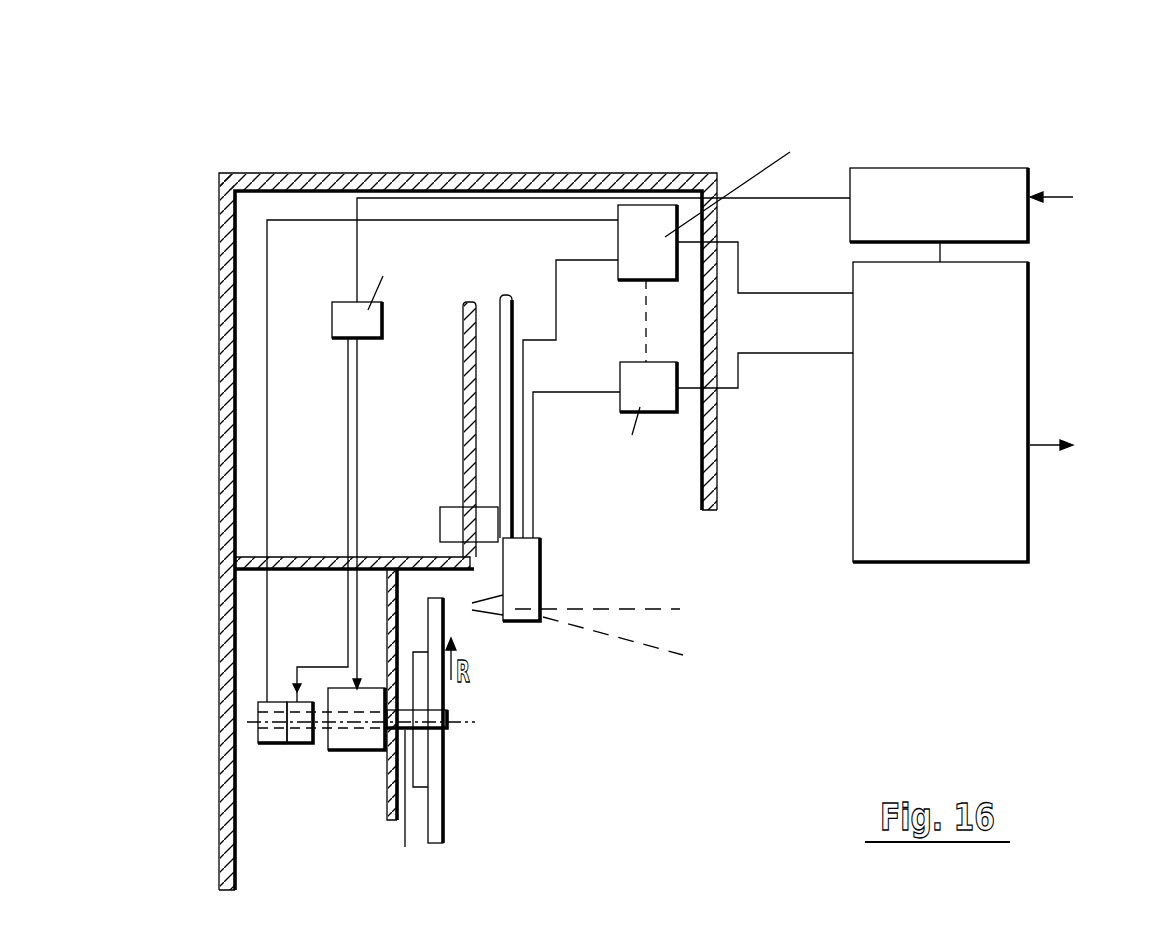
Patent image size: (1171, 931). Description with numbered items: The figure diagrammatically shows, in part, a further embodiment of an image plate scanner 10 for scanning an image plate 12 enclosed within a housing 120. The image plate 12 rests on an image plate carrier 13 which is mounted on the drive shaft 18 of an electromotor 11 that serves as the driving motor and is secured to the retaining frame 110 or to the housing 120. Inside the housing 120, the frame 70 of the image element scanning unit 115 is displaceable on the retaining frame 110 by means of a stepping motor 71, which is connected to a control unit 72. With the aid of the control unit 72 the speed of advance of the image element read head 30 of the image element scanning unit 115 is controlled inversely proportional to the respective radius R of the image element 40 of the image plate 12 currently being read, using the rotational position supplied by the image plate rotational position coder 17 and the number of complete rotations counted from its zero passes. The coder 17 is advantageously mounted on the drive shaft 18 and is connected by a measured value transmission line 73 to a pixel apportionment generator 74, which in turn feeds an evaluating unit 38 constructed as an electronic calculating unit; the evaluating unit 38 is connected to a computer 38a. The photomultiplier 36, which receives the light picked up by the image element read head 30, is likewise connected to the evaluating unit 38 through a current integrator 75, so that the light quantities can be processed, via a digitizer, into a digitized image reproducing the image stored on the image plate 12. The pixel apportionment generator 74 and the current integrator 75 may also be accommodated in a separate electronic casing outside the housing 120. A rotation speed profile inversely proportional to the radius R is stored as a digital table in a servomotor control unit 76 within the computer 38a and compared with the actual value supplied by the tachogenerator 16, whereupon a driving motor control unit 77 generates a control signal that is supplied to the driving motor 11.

The image plate scanner 10 is at (750, 130).
The electromotor 11 is at (347, 740).
The image plate 12 is at (433, 825).
The image plate carrier 13 is at (417, 773).
The tachogenerator 16 is at (298, 733).
The image plate rotational position coder 17 is at (280, 727).
The drive shaft 18 is at (361, 798).
The image element read head 30 is at (616, 612).
The photomultiplier 36 is at (632, 647).
The evaluating unit 38 is at (1013, 310).
The computer 38a is at (1080, 323).
The image element 40 is at (444, 611).
The frame 70 is at (510, 300).
The stepping motor 71 is at (485, 507).
The control unit 72 is at (448, 525).
The measured value transmission line 73 is at (405, 220).
The pixel apportionment generator 74 is at (650, 215).
The current integrator 75 is at (668, 388).
The servomotor control unit 76 is at (952, 180).
The driving motor control unit 77 is at (348, 330).
The retaining frame 110 is at (297, 572).
The image element scanning unit 115 is at (541, 568).
The housing 120 is at (219, 322).